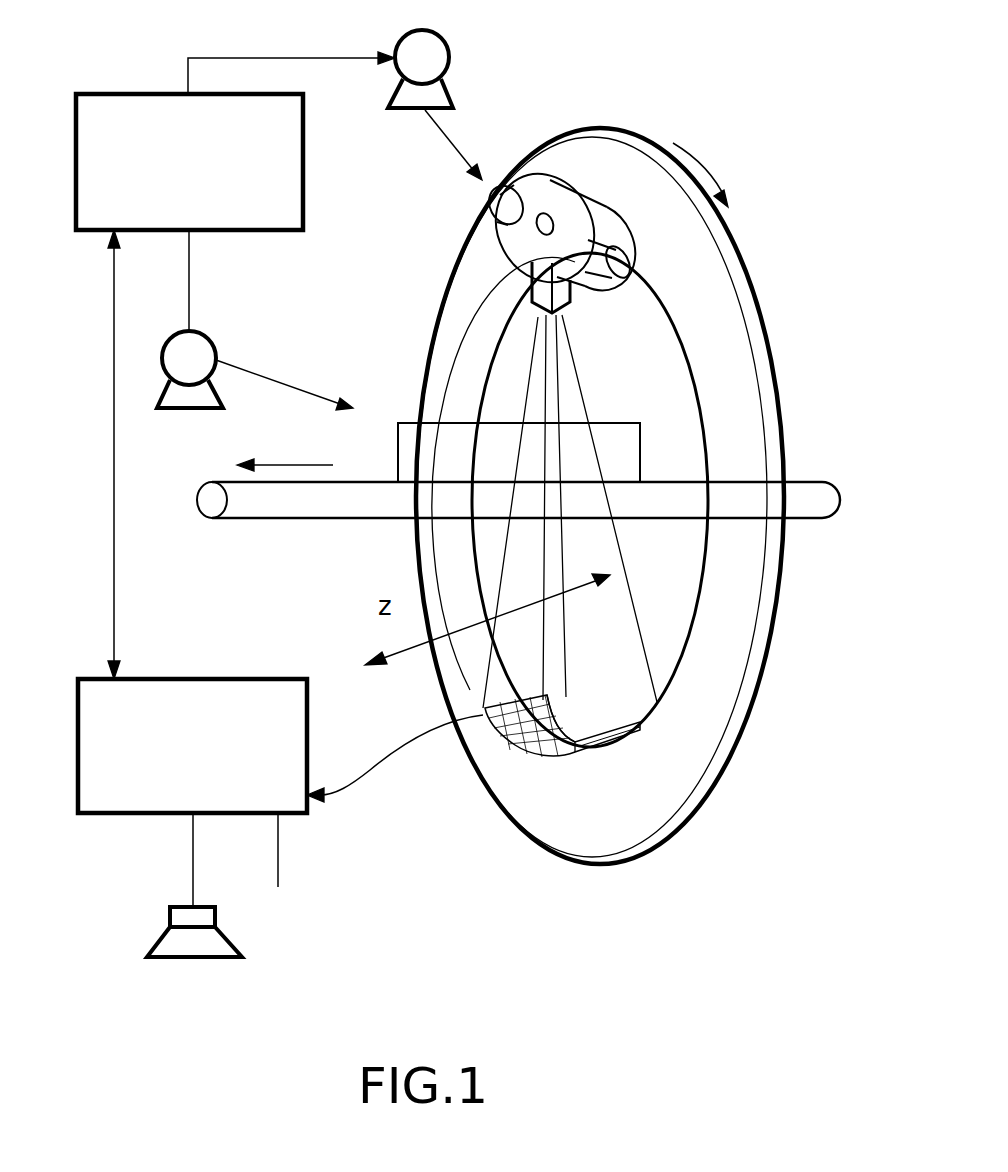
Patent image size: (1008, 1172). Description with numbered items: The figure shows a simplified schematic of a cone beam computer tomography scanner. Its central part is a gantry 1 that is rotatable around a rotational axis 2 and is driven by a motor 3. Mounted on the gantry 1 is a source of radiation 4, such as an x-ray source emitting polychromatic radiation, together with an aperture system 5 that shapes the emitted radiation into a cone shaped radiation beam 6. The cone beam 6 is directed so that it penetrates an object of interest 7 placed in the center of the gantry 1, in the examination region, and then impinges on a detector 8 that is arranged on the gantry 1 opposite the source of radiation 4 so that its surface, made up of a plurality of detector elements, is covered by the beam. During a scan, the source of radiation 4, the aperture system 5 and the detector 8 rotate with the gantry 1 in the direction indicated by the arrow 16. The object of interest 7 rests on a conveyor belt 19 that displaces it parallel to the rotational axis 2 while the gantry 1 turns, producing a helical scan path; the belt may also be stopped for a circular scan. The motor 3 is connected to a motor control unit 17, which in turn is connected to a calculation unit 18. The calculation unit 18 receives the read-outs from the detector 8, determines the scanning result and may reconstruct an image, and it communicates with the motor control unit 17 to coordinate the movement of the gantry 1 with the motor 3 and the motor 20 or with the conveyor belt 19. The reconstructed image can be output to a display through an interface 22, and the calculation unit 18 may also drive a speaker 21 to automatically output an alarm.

The gantry 1 is at (743, 655).
The rotational axis 2 is at (290, 465).
The motor 3 is at (449, 57).
The source of radiation 4 is at (567, 198).
The aperture system 5 is at (527, 270).
The cone shaped radiation beam 6 is at (595, 386).
The object of interest 7 is at (398, 440).
The detector 8 is at (532, 763).
The arrow 16 is at (700, 163).
The motor control unit 17 is at (131, 94).
The calculation unit 18 is at (220, 679).
The conveyor belt 19 is at (802, 487).
The motor 20 is at (214, 343).
The speaker 21 is at (193, 958).
The interface 22 is at (278, 862).